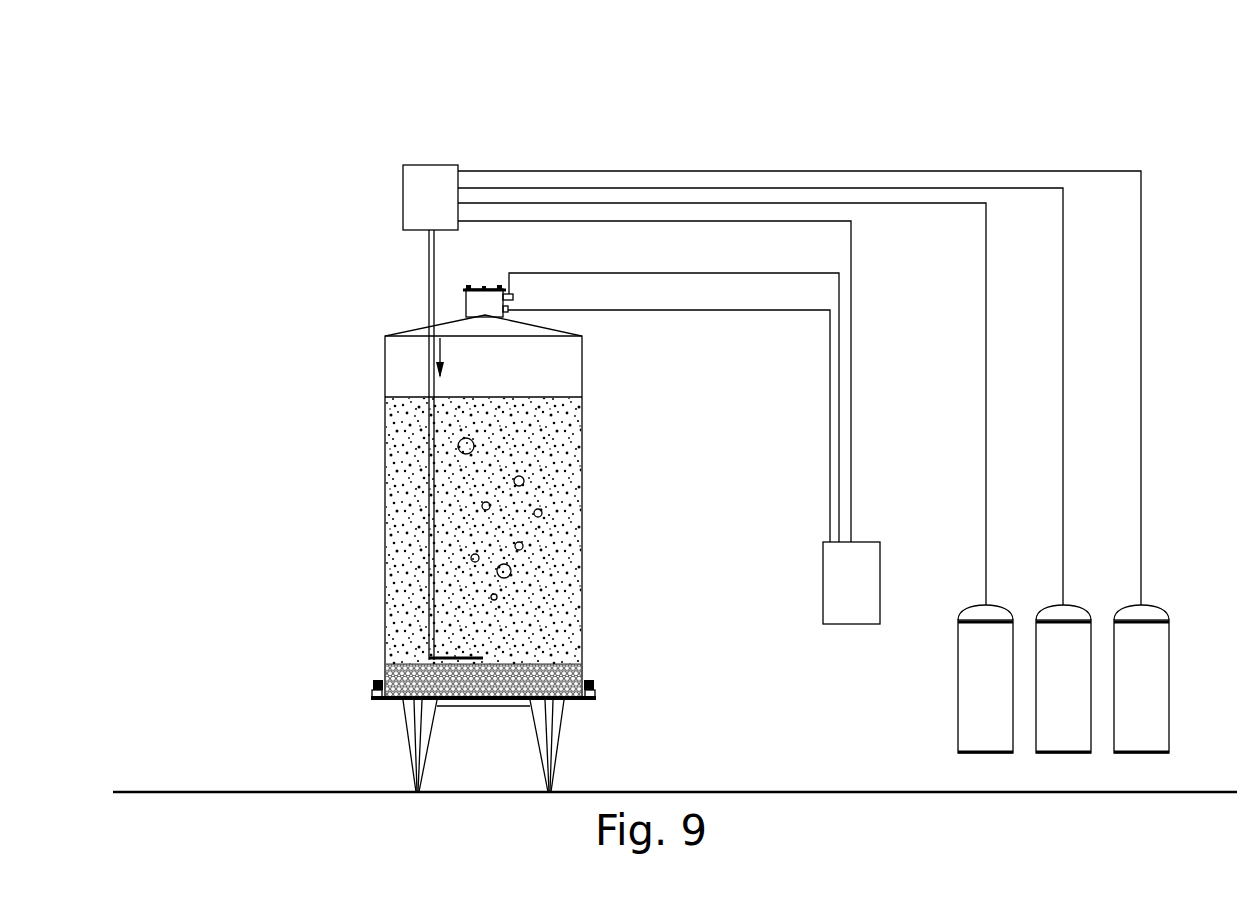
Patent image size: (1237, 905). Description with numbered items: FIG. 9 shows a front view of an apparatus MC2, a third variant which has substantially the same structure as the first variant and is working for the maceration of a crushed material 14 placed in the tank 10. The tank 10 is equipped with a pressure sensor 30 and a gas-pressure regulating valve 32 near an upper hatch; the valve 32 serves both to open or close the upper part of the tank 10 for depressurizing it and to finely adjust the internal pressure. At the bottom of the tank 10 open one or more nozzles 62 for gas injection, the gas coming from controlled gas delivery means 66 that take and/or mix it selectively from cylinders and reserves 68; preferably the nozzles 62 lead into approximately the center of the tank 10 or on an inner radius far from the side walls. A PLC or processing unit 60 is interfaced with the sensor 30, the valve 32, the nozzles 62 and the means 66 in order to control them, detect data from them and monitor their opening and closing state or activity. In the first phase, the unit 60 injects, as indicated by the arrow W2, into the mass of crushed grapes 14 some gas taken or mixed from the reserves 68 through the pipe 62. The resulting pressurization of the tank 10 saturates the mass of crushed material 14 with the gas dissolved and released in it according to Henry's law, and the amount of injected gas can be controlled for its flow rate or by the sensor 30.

The tank 10 is at (385, 431).
The crushed material 14 is at (392, 504).
The pressure sensor 30 is at (512, 308).
The gas-pressure regulating valve 32 is at (514, 294).
The processing unit 60 is at (850, 612).
The nozzles 62 is at (429, 252).
The controlled gas delivery means 66 is at (430, 172).
The cylinders and reserves 68 is at (964, 694).
The apparatus MC2 is at (740, 114).
The arrow W2 is at (462, 358).